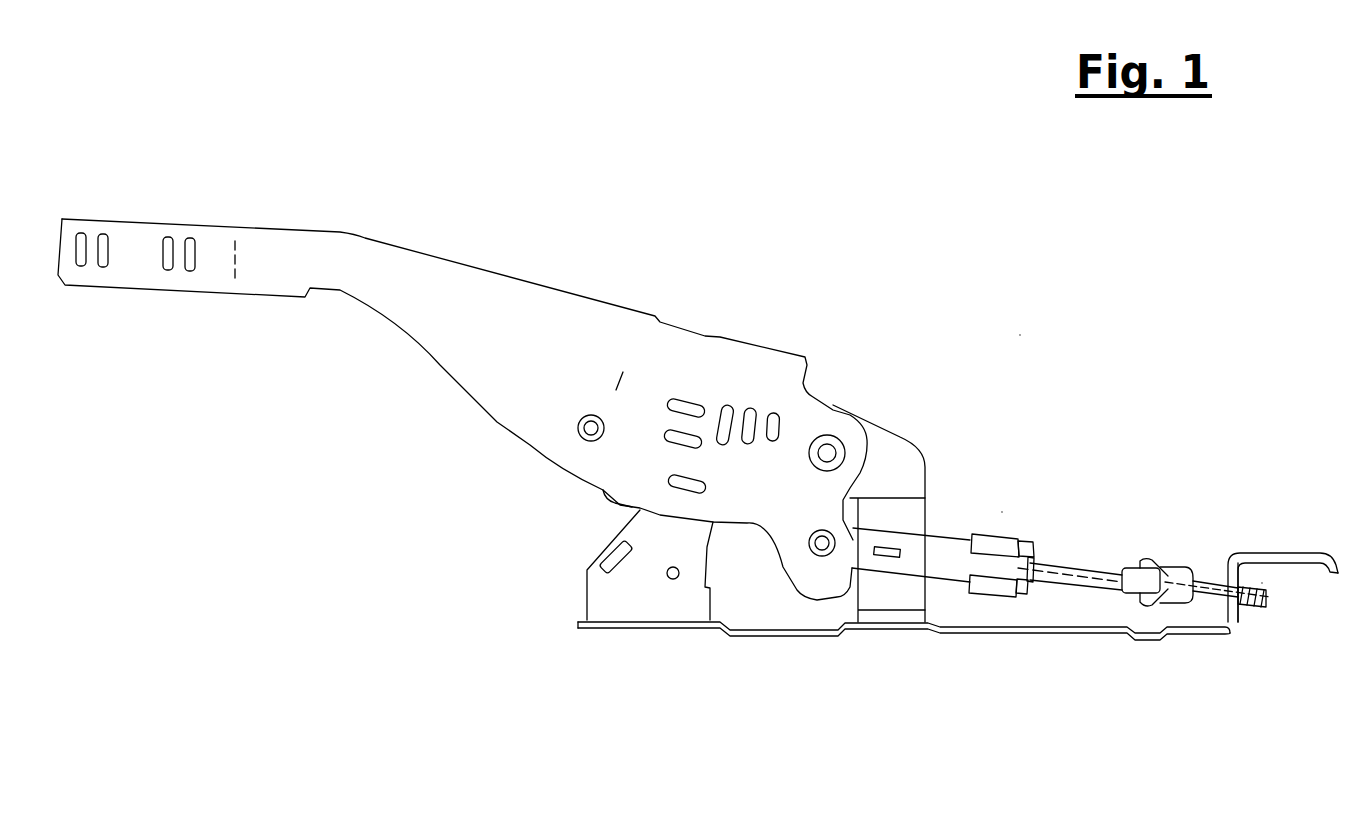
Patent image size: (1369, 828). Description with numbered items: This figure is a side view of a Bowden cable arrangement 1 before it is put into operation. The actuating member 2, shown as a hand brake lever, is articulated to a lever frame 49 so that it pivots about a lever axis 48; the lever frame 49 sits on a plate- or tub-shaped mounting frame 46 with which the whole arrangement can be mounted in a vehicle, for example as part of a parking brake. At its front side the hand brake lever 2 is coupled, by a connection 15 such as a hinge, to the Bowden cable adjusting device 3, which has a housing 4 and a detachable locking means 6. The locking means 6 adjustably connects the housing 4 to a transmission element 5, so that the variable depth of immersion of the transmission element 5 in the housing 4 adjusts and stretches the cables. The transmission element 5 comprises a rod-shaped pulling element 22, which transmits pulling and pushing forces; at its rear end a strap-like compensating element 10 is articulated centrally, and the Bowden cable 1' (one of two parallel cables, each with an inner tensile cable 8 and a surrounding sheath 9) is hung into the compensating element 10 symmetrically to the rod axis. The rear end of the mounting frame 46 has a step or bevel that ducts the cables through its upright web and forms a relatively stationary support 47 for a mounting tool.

The Bowden cable arrangement 1 is at (973, 205).
The Bowden cable 1' is at (1297, 535).
The actuating member 2 is at (453, 277).
The Bowden cable adjusting device 3 is at (1002, 512).
The housing 4 is at (943, 550).
The transmission element 5 is at (1207, 602).
The detachable locking means 6 is at (1038, 543).
The inner tensile cable 8 is at (1267, 598).
The sheath 9 is at (1242, 568).
The compensating element 10 is at (1178, 600).
The connection 15 is at (820, 553).
The pulling element 22 is at (1102, 583).
The mounting frame 46 is at (982, 630).
The support 47 is at (1227, 573).
The lever axis 48 is at (827, 453).
The lever frame 49 is at (900, 457).